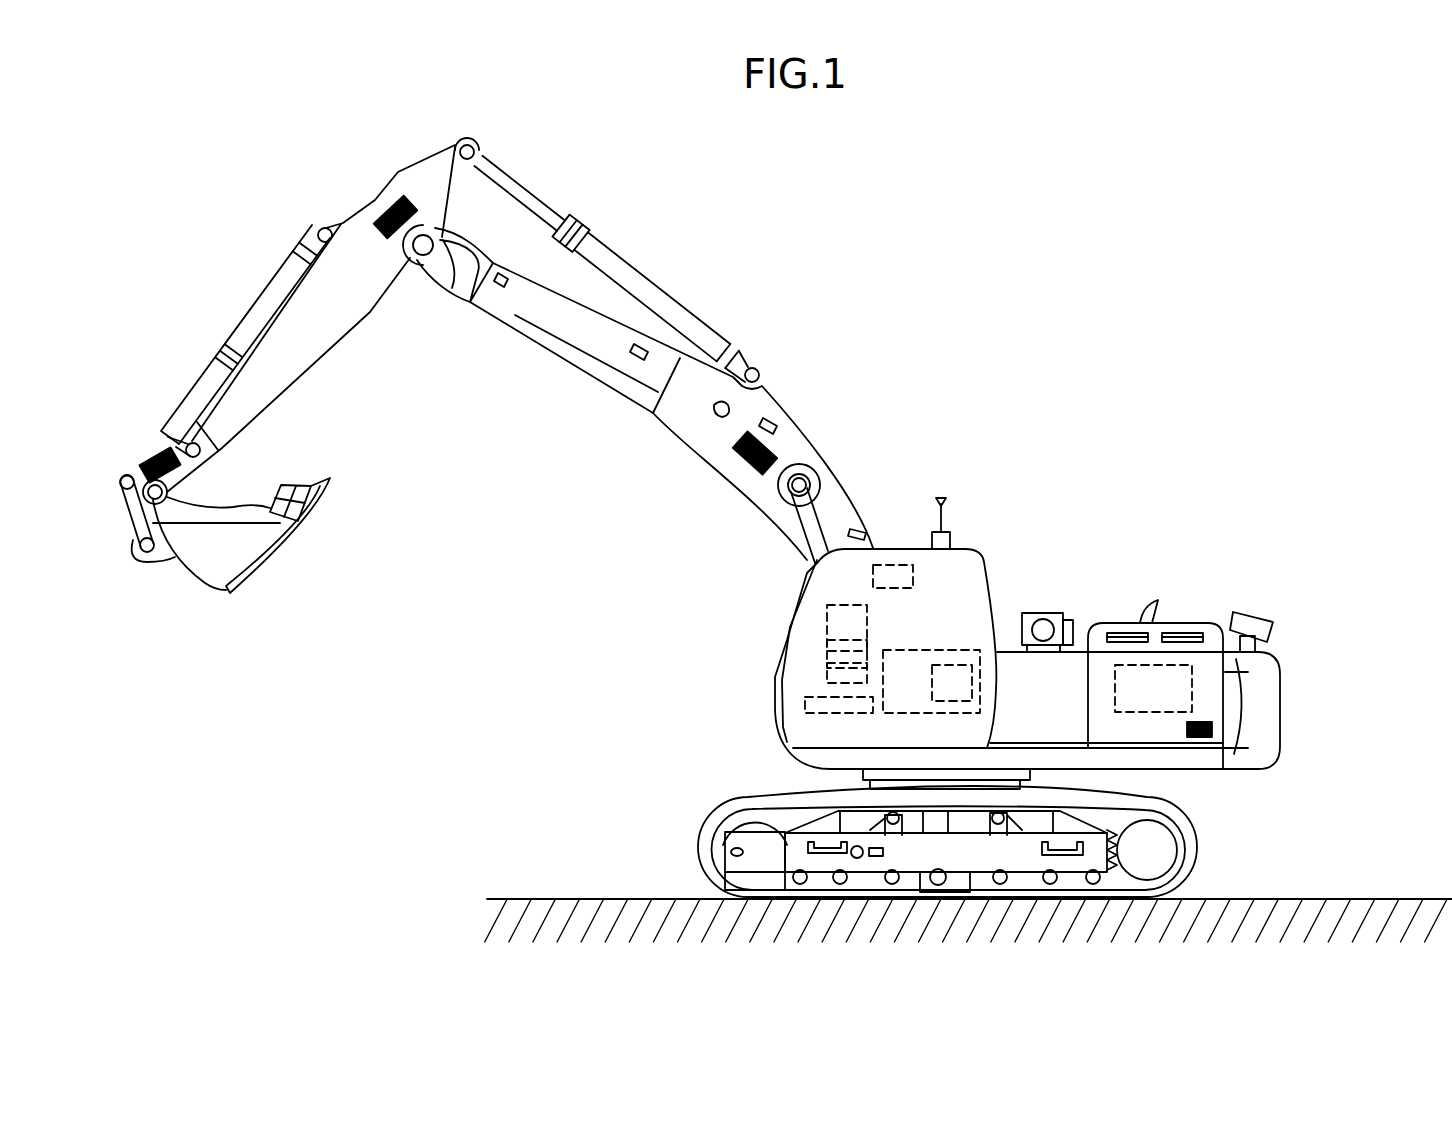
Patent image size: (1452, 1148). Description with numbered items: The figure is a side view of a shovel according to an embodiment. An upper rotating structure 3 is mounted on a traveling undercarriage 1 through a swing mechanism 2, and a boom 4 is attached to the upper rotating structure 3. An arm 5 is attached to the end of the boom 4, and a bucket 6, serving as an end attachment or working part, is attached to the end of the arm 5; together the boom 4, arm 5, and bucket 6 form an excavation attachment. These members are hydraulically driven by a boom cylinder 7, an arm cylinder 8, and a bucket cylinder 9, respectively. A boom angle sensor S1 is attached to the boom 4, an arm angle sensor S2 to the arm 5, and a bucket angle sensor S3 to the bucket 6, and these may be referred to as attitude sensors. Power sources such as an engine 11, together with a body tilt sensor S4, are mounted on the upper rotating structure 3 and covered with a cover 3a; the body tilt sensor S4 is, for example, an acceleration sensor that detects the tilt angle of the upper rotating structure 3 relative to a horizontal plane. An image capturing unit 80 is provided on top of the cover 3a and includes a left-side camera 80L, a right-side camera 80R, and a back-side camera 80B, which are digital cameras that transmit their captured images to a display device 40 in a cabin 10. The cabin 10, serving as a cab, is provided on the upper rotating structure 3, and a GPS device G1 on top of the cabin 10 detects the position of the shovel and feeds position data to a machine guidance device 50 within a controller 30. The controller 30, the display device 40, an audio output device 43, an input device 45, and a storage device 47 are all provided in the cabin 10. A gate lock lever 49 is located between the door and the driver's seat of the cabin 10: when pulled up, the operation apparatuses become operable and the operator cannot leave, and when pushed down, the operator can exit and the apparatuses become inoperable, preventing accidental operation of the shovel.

The traveling undercarriage 1 is at (700, 853).
The swing mechanism 2 is at (1032, 777).
The upper rotating structure 3 is at (1065, 650).
The cover 3a is at (1262, 672).
The boom 4 is at (638, 392).
The arm 5 is at (311, 292).
The bucket 6 is at (214, 517).
The boom cylinder 7 is at (813, 525).
The arm cylinder 8 is at (678, 312).
The bucket cylinder 9 is at (262, 315).
The cabin 10 is at (869, 604).
The engine 11 is at (1192, 695).
The controller 30 is at (907, 715).
The display device 40 is at (827, 619).
The audio output device 43 is at (895, 565).
The input device 45 is at (827, 649).
The storage device 47 is at (827, 673).
The gate lock lever 49 is at (805, 704).
The machine guidance device 50 is at (950, 665).
The image capturing unit 80 is at (1147, 569).
The left-side camera 80L is at (1042, 612).
The right-side camera 80R is at (1070, 613).
The back-side camera 80B is at (1238, 593).
The GPS device G1 is at (948, 510).
The boom angle sensor S1 is at (762, 440).
The arm angle sensor S2 is at (390, 208).
The bucket angle sensor S3 is at (150, 460).
The body tilt sensor S4 is at (1212, 728).